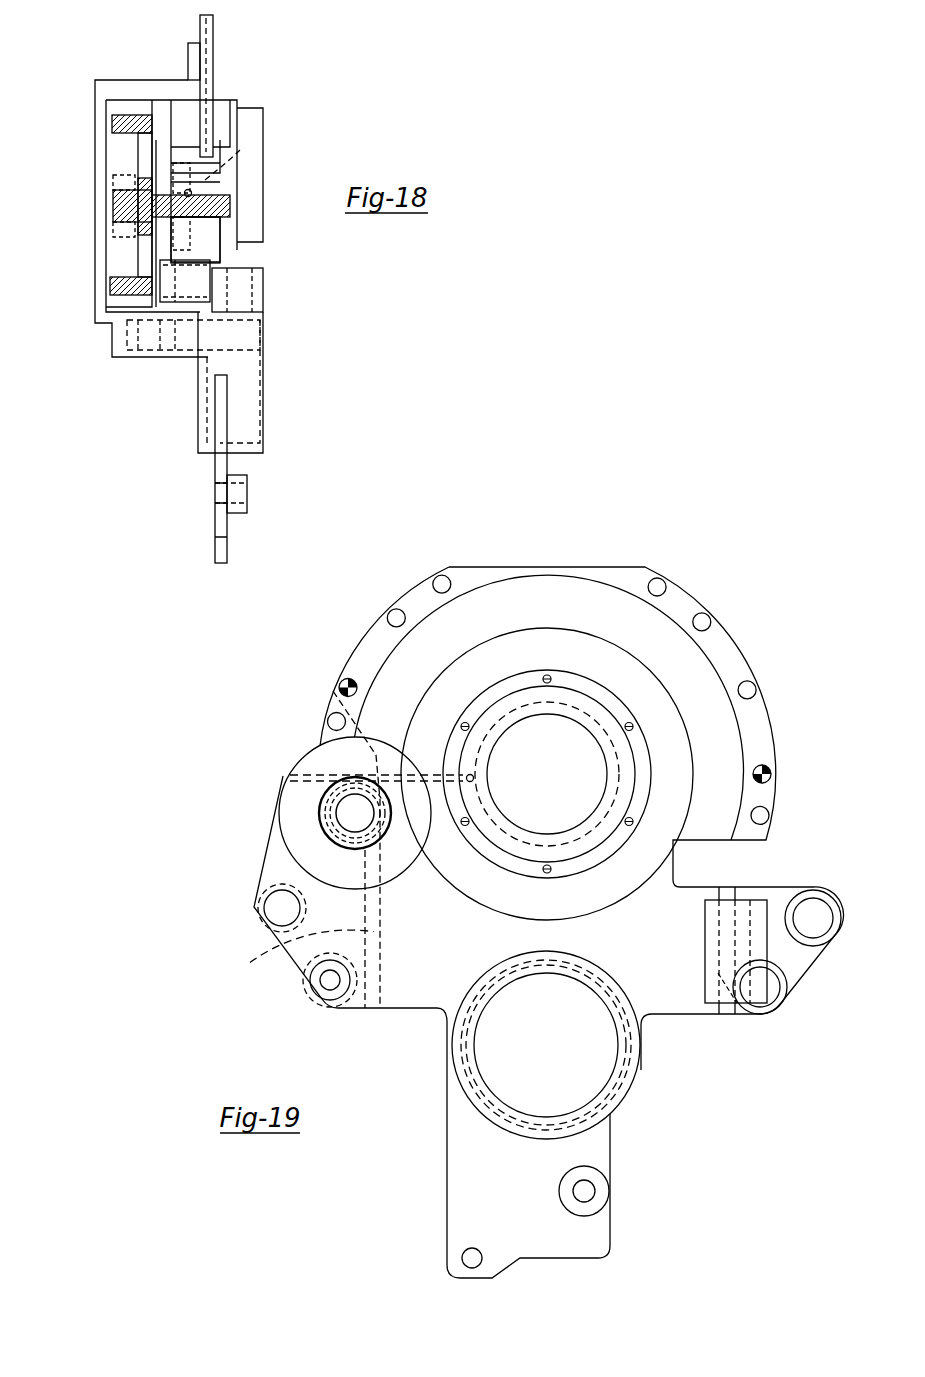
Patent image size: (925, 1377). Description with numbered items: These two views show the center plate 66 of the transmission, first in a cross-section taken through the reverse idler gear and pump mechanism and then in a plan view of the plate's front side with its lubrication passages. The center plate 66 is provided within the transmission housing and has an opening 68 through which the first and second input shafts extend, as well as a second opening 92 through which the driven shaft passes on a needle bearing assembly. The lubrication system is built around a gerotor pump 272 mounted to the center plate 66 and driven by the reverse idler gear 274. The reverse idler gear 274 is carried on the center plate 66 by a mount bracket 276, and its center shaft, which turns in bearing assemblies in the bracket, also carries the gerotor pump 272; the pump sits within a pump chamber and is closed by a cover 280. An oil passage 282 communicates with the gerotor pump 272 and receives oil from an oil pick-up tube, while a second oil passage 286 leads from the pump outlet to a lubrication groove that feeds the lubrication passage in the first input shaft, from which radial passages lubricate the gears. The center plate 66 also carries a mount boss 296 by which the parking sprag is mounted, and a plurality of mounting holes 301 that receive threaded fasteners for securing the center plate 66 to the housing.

In FIG. 18, the center plate 66 is at (205, 90).
In FIG. 19, the center plate 66 is at (542, 605).
In FIG. 19, the opening 68 is at (540, 720).
In FIG. 19, the opening 92 is at (612, 1058).
In FIG. 18, the gerotor pump 272 is at (240, 150).
In FIG. 19, the gerotor pump 272 is at (318, 814).
In FIG. 18, the reverse idler gear 274 is at (125, 124).
In FIG. 18, the mount bracket 276 is at (133, 88).
In FIG. 18, the cover 280 is at (188, 223).
In FIG. 19, the oil passage 282 is at (250, 964).
In FIG. 18, the second oil passage 286 is at (193, 193).
In FIG. 19, the second oil passage 286 is at (333, 691).
In FIG. 18, the mount boss 296 is at (238, 480).
In FIG. 19, the mount boss 296 is at (600, 1204).
In FIG. 19, the mounting holes 301 is at (440, 579).